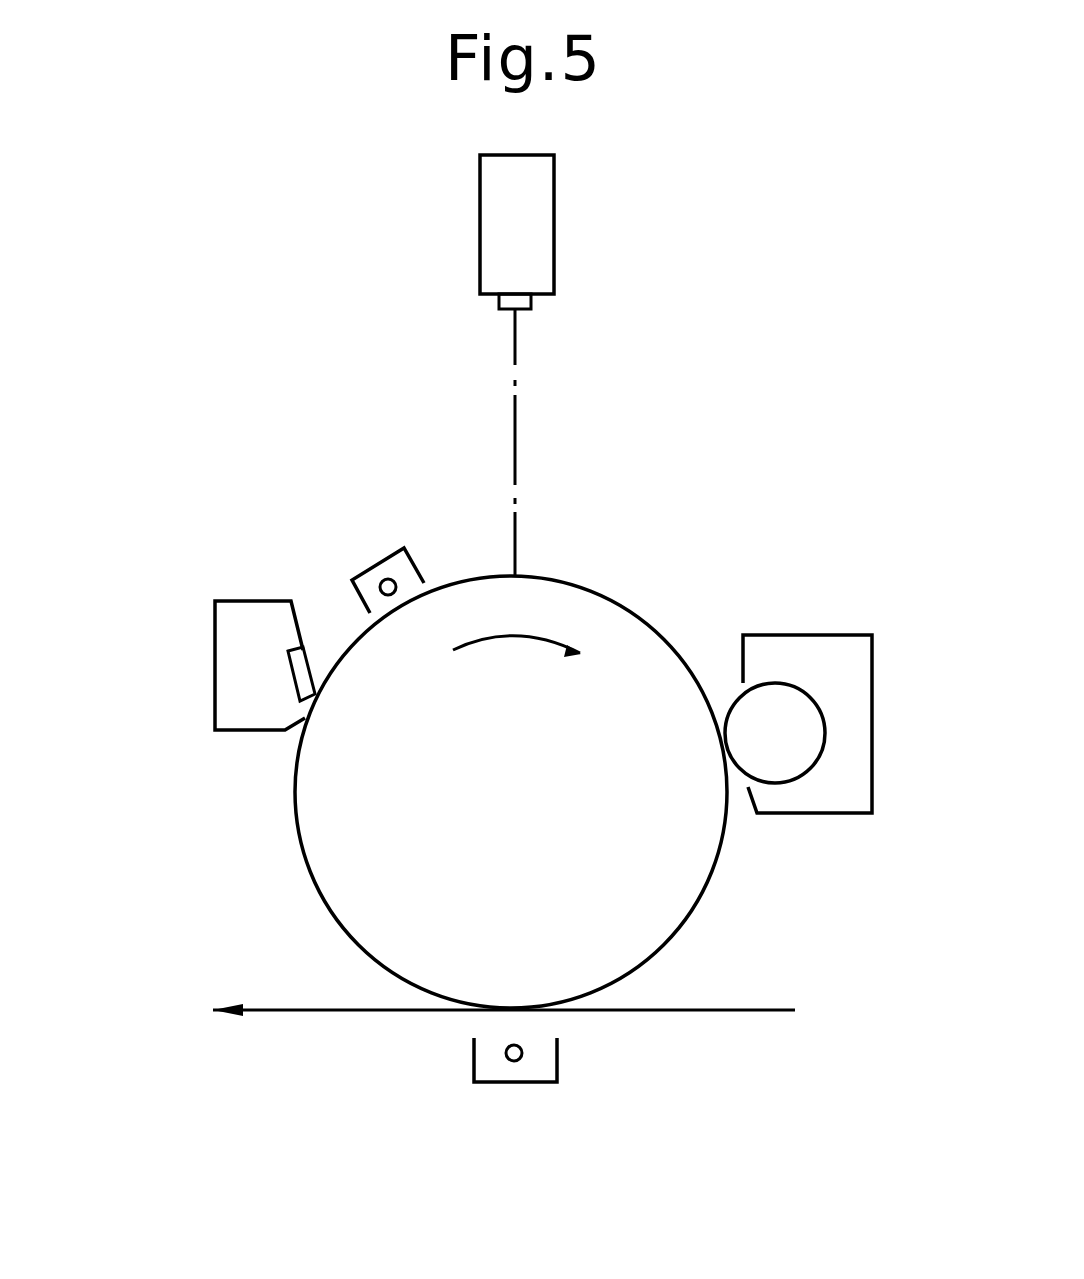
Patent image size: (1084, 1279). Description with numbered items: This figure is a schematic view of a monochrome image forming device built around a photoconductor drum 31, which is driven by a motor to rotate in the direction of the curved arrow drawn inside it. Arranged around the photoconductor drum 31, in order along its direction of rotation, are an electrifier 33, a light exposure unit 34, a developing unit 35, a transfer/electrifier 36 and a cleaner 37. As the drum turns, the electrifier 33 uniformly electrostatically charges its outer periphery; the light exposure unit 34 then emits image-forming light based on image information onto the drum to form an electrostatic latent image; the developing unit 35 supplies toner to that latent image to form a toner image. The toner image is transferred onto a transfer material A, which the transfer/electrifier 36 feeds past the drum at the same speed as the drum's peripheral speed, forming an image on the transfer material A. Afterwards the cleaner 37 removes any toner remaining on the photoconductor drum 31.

The photoconductor drum 31 is at (330, 843).
The electrifier 33 is at (380, 560).
The light exposure unit 34 is at (478, 222).
The developing unit 35 is at (862, 632).
The transfer/electrifier 36 is at (517, 1083).
The cleaner 37 is at (215, 668).
The transfer material A is at (316, 1012).